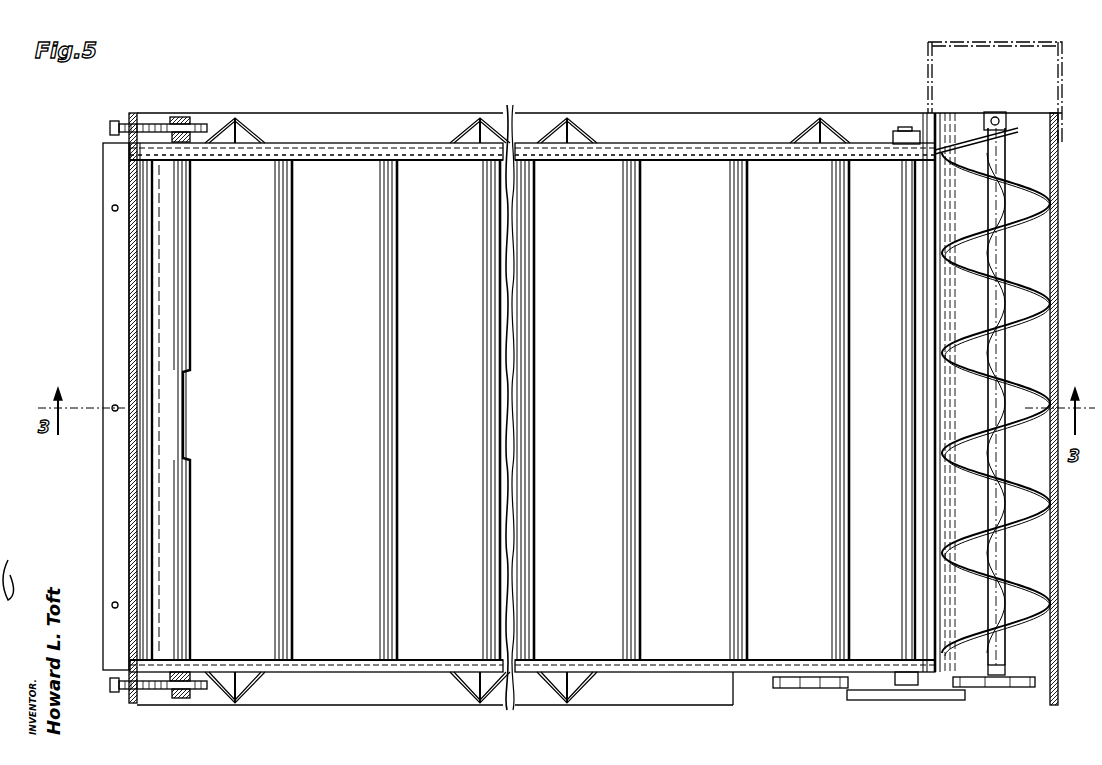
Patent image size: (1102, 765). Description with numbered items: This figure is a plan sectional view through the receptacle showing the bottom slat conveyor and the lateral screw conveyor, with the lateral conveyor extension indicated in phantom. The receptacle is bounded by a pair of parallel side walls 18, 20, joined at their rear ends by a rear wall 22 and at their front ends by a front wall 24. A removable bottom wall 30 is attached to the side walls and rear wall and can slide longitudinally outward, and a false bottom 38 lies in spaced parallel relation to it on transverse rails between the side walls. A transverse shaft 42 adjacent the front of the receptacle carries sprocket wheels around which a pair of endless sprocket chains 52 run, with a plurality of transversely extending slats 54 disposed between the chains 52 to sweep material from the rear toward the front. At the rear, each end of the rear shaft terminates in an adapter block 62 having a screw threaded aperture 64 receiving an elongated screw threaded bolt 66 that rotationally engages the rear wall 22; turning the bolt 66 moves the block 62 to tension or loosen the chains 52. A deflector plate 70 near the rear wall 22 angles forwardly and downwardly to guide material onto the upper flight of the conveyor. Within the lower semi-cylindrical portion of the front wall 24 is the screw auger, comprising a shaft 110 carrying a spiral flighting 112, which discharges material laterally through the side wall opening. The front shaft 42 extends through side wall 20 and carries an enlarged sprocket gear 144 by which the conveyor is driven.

The side wall 18 is at (650, 150).
The side wall 20 is at (632, 678).
The rear wall 22 is at (130, 126).
The front wall 24 is at (1052, 283).
The bottom wall 30 is at (105, 315).
The false bottom 38 is at (340, 172).
The transverse shaft 42 is at (903, 433).
The endless sprocket chains 52 is at (697, 165).
The slats 54 is at (388, 385).
The adapter block 62 is at (180, 117).
The screw threaded aperture 64 is at (195, 128).
The screw threaded bolt 66 is at (156, 124).
The deflector plate 70 is at (137, 386).
The shaft 110 is at (1000, 383).
The spiral flighting 112 is at (1038, 318).
The sprocket gear 144 is at (875, 705).